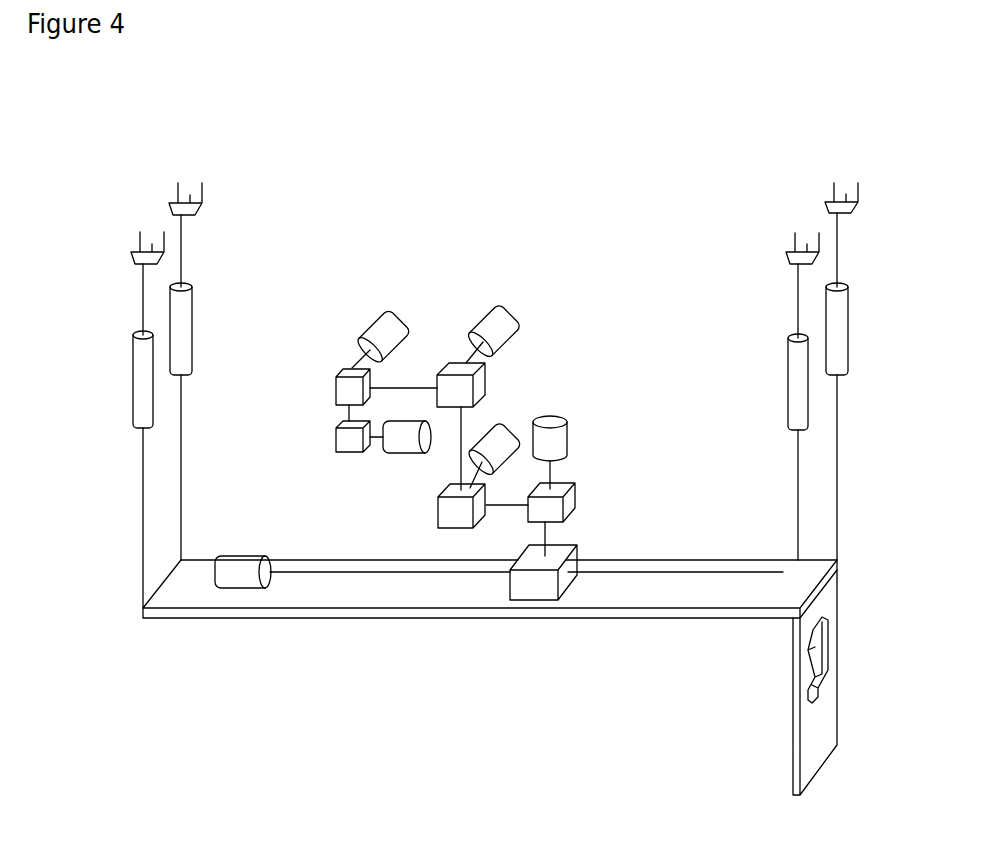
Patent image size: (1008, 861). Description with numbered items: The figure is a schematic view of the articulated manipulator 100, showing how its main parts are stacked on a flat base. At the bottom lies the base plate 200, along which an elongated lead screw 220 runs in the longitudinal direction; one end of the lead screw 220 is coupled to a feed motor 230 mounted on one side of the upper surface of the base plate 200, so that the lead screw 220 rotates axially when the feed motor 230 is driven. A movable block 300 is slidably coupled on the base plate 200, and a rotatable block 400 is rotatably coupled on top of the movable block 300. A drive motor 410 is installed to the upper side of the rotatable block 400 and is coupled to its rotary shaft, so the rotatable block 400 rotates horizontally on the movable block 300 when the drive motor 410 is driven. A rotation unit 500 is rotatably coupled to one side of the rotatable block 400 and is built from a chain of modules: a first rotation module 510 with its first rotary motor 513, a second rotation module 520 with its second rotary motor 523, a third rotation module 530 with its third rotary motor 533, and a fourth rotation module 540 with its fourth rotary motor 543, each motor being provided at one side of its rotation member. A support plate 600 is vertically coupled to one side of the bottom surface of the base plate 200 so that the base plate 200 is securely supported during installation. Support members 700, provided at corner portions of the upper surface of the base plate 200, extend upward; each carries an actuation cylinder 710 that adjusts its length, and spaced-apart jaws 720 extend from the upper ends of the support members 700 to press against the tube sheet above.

The articulated manipulator 100 is at (233, 73).
The base plate 200 is at (398, 612).
The lead screw 220 is at (303, 574).
The feed motor 230 is at (228, 578).
The movable block 300 is at (532, 585).
The rotatable block 400 is at (573, 497).
The drive motor 410 is at (568, 436).
The rotation unit 500 is at (538, 248).
The first rotation module 510 is at (428, 520).
The first rotary motor 513 is at (507, 425).
The second rotation module 520 is at (490, 378).
The second rotary motor 523 is at (512, 308).
The third rotation module 530 is at (333, 360).
The third rotary motor 533 is at (366, 330).
The fourth rotation module 540 is at (325, 460).
The fourth rotary motor 543 is at (392, 453).
The support plate 600 is at (812, 740).
The support member 700 is at (839, 456).
The actuation cylinder 710 is at (832, 318).
The jaws 720 is at (858, 186).